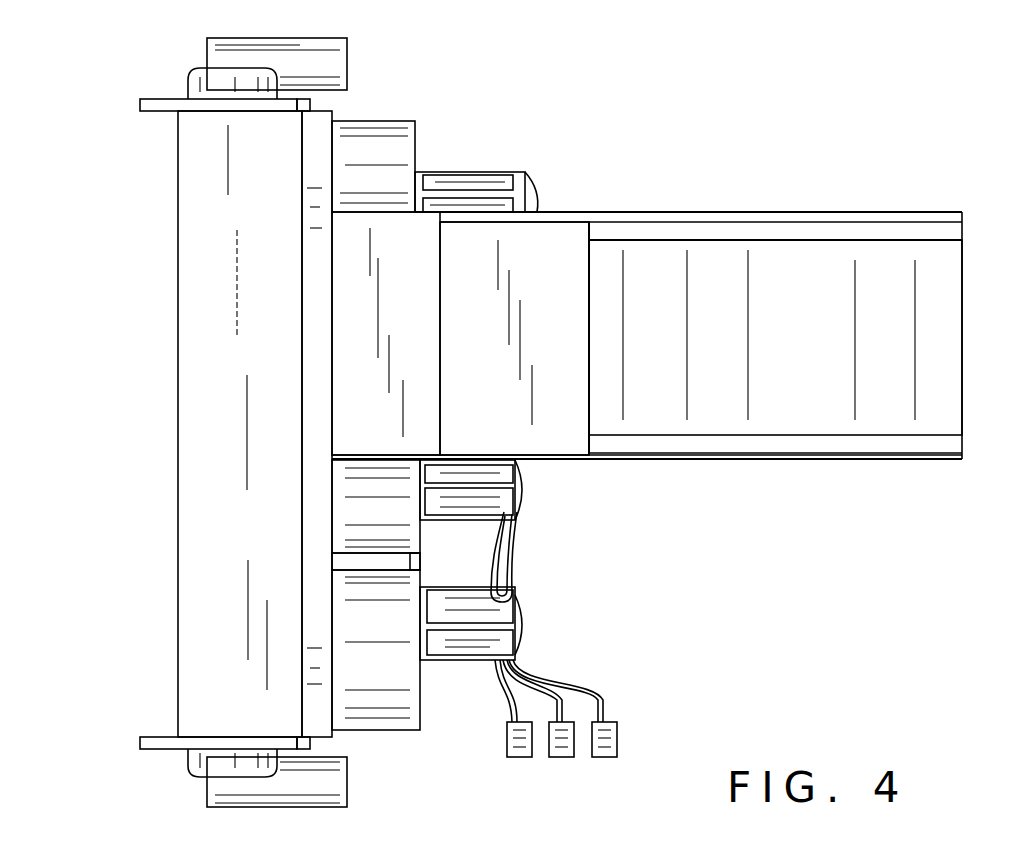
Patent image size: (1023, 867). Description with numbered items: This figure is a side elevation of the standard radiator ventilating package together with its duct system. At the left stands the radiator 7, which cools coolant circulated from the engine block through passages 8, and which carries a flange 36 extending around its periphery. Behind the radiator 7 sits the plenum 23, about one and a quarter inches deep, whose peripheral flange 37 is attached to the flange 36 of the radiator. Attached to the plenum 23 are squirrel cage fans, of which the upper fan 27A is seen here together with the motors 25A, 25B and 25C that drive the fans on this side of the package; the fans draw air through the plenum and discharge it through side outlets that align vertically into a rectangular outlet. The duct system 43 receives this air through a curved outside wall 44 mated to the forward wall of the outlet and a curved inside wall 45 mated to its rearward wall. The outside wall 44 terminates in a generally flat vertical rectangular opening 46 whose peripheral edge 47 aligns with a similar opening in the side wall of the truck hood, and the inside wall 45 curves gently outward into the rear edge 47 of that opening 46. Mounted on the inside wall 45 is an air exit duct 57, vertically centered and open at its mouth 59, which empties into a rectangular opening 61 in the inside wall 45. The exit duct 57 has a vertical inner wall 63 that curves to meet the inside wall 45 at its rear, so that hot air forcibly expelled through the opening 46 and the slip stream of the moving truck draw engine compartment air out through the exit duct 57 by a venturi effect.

The radiator 7 is at (207, 423).
The passages 8 is at (333, 52).
The plenum 23 is at (320, 310).
The motor 25A is at (493, 177).
The motor 25B is at (510, 492).
The motor 25C is at (520, 607).
The squirrel cage fan 27A is at (400, 130).
The flange 36 is at (290, 108).
The peripheral flange 37 is at (312, 105).
The duct system 43 is at (788, 205).
The curved outside wall 44 is at (413, 280).
The curved inside wall 45 is at (570, 283).
The rectangular opening 46 is at (845, 452).
The peripheral edge 47 is at (855, 212).
The air exit duct 57 is at (657, 394).
The mouth 59 is at (590, 356).
The rectangular opening 61 is at (697, 250).
The vertical inner wall 63 is at (810, 328).